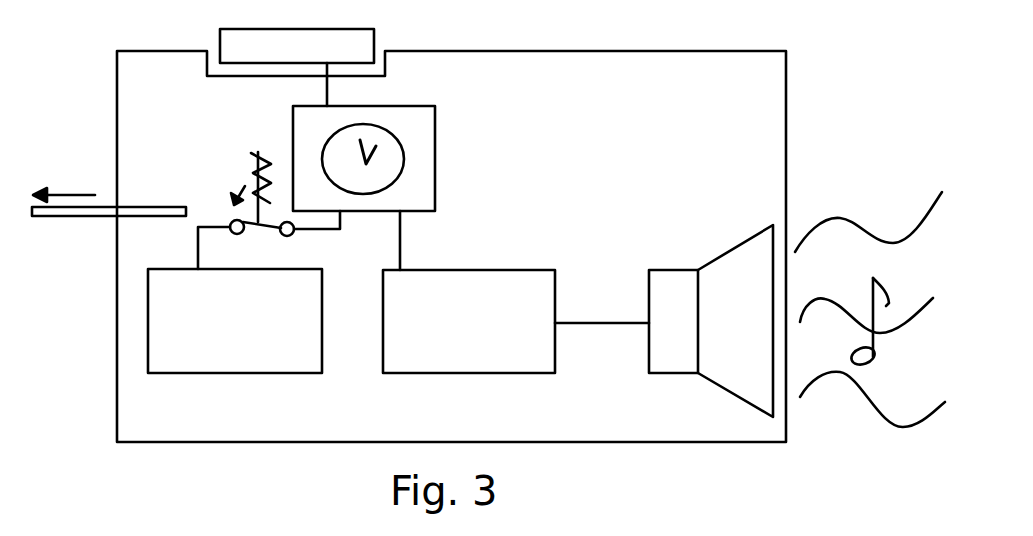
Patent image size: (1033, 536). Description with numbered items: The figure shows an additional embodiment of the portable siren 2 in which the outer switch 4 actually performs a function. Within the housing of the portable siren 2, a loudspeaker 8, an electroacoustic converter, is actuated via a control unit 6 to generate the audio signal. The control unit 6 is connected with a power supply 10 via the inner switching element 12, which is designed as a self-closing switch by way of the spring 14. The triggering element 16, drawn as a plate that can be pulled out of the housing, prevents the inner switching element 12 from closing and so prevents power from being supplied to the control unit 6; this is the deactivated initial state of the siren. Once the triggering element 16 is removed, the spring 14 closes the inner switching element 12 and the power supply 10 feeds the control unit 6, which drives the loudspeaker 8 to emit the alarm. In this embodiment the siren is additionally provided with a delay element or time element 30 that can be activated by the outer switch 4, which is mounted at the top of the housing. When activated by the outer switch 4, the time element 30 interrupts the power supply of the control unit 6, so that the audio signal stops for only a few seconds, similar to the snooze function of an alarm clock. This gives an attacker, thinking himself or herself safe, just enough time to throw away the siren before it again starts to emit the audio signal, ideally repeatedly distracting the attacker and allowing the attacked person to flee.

The portable siren 2 is at (505, 33).
The outer switch 4 is at (297, 67).
The time element 30 is at (427, 148).
The inner switching element 12 is at (247, 172).
The spring 14 is at (223, 192).
The triggering element 16 is at (101, 221).
The power supply 10 is at (235, 321).
The control unit 6 is at (516, 321).
The loudspeaker 8 is at (711, 321).